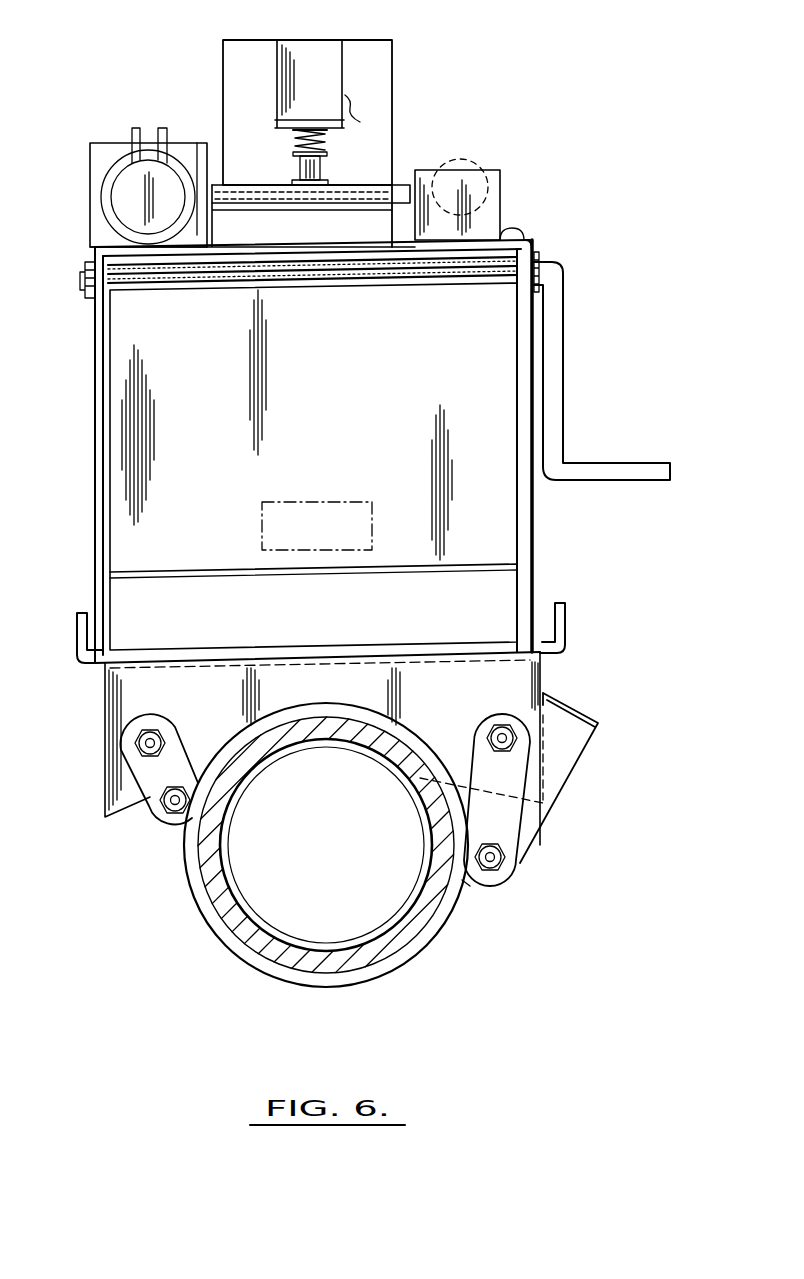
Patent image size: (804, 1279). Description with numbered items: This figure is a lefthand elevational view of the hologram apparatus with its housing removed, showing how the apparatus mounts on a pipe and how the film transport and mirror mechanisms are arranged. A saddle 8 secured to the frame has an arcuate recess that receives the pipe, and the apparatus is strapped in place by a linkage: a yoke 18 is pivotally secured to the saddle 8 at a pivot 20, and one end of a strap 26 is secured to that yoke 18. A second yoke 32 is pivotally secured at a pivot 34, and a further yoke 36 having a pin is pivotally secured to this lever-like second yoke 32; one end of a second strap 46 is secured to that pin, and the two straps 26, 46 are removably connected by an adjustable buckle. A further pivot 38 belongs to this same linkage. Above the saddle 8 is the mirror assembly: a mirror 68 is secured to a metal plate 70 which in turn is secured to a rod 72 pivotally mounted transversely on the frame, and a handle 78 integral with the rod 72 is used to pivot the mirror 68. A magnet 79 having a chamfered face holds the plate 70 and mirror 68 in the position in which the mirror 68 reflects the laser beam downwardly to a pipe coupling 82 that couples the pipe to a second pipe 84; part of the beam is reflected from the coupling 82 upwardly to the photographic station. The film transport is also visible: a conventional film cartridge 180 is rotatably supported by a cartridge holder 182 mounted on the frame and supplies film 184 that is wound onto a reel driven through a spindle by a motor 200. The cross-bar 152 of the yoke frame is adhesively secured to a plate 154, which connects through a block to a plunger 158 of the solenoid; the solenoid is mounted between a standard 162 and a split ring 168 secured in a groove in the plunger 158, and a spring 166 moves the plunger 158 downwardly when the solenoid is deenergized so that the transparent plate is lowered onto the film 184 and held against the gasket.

The saddle 8 is at (331, 693).
The yoke 18 is at (182, 739).
The pivot 20 is at (152, 730).
The strap 26 is at (186, 831).
The second yoke 32 is at (480, 752).
The pivot 34 is at (495, 725).
The yoke 36 is at (570, 758).
The lower pivot bolt 38 is at (500, 870).
The second strap 46 is at (468, 888).
The mirror 68 is at (333, 617).
The metal plate 70 is at (325, 417).
The rod 72 is at (412, 274).
The handle 78 is at (615, 468).
The magnet 79 is at (262, 520).
The pipe coupling 82 is at (410, 955).
The pipe 84 is at (390, 921).
The cross-bar 152 is at (274, 197).
The plate 154 is at (322, 40).
The plunger 158 is at (322, 168).
The standard 162 is at (375, 61).
The spring 166 is at (327, 146).
The split ring 168 is at (293, 158).
The film cartridge 180 is at (458, 160).
The cartridge holder 182 is at (495, 182).
The film 184 is at (215, 208).
The motor 200 is at (126, 193).